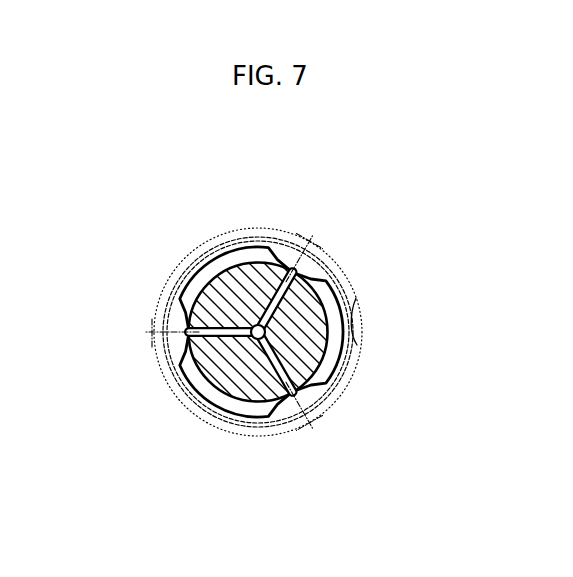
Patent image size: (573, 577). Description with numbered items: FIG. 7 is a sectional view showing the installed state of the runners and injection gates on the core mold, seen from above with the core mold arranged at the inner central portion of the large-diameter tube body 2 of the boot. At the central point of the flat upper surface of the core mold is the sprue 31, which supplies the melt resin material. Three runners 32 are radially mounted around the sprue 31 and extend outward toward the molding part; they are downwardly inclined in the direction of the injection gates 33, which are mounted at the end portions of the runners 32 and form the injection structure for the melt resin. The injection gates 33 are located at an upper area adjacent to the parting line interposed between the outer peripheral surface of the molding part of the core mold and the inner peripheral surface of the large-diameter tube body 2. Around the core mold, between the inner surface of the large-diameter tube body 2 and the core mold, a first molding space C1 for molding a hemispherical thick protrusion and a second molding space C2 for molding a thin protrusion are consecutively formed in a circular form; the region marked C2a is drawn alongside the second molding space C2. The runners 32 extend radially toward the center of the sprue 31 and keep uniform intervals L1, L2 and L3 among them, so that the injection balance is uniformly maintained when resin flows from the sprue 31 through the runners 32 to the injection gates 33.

The large-diameter tube body 2 is at (356, 298).
The sprue 31 is at (337, 333).
The runners 32 is at (183, 292).
The injection gates 33 is at (291, 271).
The first molding space C1 is at (326, 249).
The second molding space C2 is at (218, 250).
The circle C2a is at (357, 345).
The uniform interval L1 is at (194, 226).
The uniform interval L2 is at (374, 323).
The uniform interval L3 is at (192, 444).